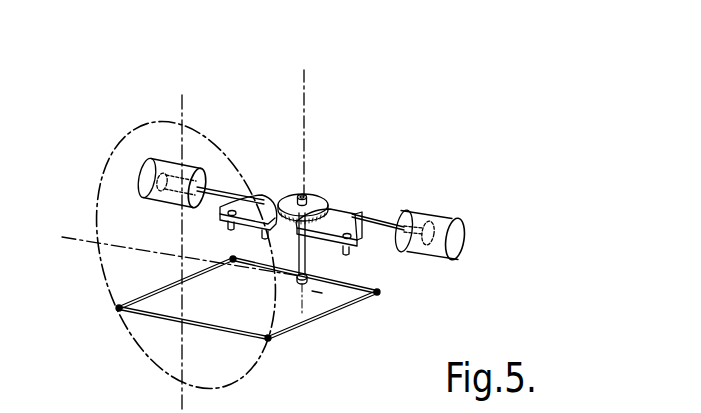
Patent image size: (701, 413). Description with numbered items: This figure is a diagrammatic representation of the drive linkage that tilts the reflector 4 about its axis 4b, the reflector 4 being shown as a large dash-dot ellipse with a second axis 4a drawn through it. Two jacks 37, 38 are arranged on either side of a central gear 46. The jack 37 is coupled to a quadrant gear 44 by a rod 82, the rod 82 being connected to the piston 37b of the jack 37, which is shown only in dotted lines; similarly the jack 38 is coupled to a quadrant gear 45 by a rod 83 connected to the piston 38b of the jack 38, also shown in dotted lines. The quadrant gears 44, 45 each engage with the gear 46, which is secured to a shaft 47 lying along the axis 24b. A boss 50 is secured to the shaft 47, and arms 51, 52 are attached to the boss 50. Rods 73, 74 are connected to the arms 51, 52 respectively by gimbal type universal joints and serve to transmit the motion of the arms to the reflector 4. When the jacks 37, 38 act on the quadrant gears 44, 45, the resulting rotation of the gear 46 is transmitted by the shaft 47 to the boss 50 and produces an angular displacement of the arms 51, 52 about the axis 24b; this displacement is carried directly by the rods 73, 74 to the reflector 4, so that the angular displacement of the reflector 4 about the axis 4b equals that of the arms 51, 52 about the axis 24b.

The reflector 4 is at (252, 373).
The axis of the reflector 4a is at (60, 240).
The axis of the reflector 4b is at (196, 96).
The axis 24b is at (324, 72).
The jack 37 is at (463, 233).
The piston of the jack 37b is at (430, 222).
The jack 38 is at (142, 172).
The piston of the jack 38b is at (162, 174).
The quadrant gear 44 is at (345, 216).
The quadrant gear 45 is at (259, 206).
The gear 46 is at (316, 195).
The shaft 47 is at (307, 262).
The boss 50 is at (318, 292).
The arm 51 is at (347, 288).
The arm 52 is at (232, 263).
The rod 73 is at (314, 321).
The rod 74 is at (147, 292).
The rod 82 is at (384, 220).
The rod 83 is at (262, 198).